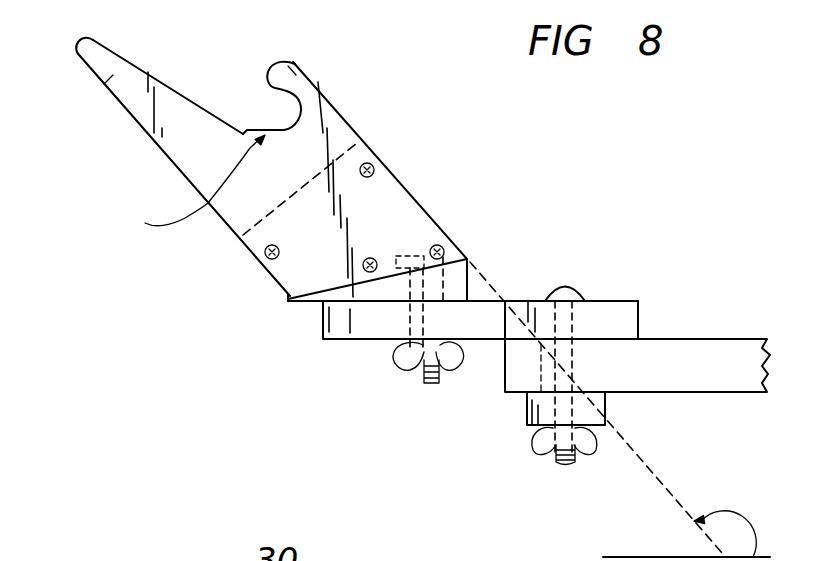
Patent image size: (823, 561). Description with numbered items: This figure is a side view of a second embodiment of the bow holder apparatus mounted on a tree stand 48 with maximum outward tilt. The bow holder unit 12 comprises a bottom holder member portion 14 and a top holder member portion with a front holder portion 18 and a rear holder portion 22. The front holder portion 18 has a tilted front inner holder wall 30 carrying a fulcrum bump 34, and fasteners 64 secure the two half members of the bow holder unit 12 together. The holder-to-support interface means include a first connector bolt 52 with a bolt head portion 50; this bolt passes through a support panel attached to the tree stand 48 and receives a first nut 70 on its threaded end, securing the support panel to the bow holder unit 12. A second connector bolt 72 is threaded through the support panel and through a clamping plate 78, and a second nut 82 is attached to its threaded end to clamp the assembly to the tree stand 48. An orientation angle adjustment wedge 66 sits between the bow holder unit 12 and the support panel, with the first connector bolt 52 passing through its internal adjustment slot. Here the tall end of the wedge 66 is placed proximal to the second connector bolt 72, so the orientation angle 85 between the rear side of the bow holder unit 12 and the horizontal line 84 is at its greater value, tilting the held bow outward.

The bow holder unit 12 is at (375, 117).
The bottom holder member portion 14 is at (383, 219).
The front holder portion 18 is at (154, 157).
The rear holder portion 22 is at (293, 70).
The front inner holder wall 30 is at (190, 99).
The fulcrum bump 34 is at (181, 189).
The tree stand 48 is at (698, 360).
The bolt head portion 50 is at (426, 244).
The first connector bolt 52 is at (417, 327).
The fasteners 64 is at (375, 170).
The orientation angle adjustment wedge 66 is at (474, 275).
The first nut 70 is at (455, 352).
The second connector bolt 72 is at (563, 458).
The clamping plate 78 is at (606, 400).
The second nut 82 is at (538, 440).
The horizontal line 84 is at (643, 557).
The orientation angle 85 is at (738, 522).